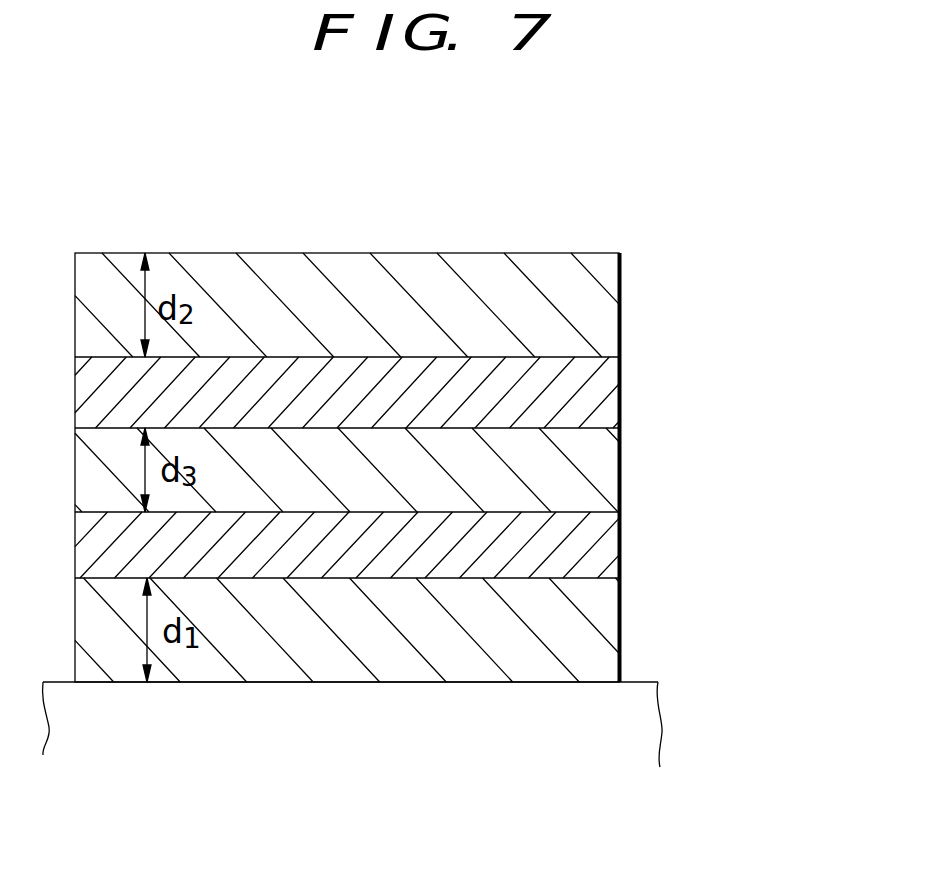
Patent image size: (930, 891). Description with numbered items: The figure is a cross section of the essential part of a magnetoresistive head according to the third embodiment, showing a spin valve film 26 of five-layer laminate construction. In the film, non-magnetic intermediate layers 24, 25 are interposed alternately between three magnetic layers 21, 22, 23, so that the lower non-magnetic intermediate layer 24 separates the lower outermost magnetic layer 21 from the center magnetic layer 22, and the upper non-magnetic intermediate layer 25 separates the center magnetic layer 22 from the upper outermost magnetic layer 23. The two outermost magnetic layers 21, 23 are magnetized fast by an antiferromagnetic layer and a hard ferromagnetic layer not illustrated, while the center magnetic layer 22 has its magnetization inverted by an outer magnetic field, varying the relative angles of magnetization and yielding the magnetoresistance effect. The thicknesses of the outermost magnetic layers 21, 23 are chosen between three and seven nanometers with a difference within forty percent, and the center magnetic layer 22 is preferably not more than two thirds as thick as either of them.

The magnetic layer 21 is at (598, 628).
The center magnetic layer 22 is at (598, 473).
The magnetic layer 23 is at (598, 304).
The non-magnetic intermediate layer 24 is at (598, 548).
The non-magnetic intermediate layer 25 is at (598, 396).
The spin valve film 26 is at (745, 252).